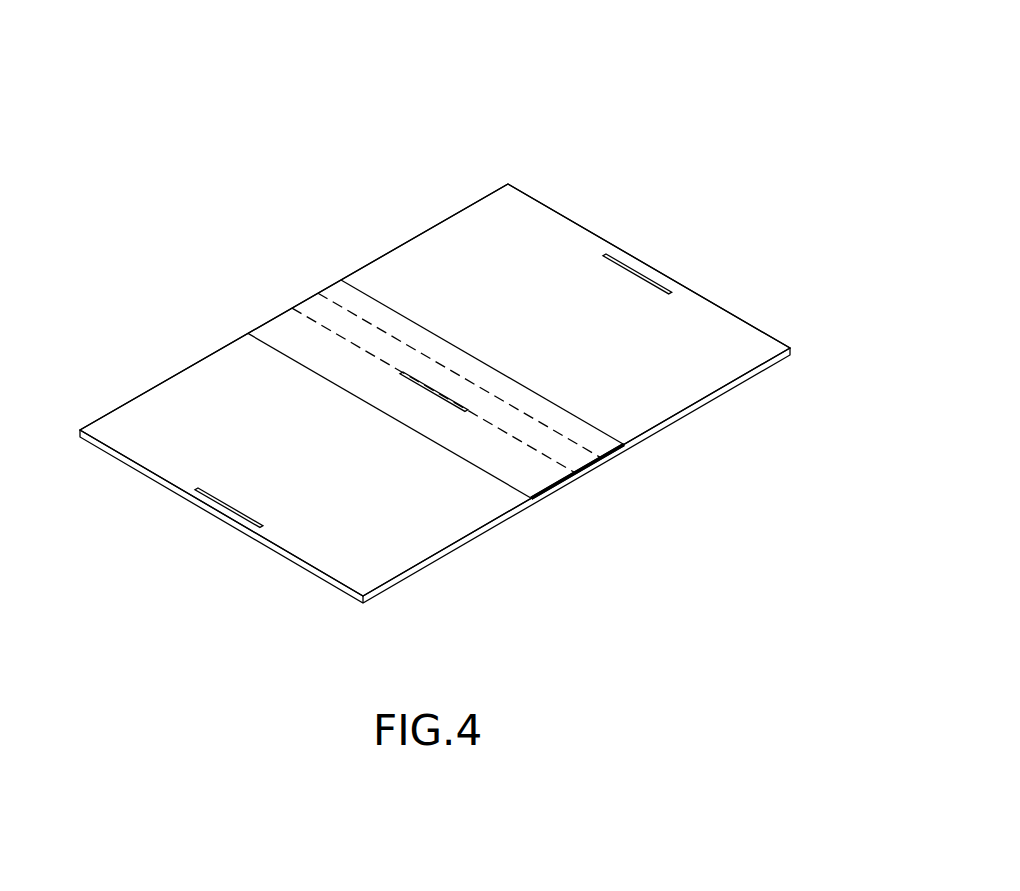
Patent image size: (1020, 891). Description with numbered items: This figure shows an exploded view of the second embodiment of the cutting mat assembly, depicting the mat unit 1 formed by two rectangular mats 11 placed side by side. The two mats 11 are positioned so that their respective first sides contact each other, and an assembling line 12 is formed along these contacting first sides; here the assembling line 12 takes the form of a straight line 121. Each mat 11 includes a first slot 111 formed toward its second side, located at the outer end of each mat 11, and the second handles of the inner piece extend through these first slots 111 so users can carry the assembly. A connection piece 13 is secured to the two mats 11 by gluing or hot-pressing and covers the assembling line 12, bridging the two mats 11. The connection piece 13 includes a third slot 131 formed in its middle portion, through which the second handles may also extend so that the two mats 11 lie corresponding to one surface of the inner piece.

The mat unit 1 is at (252, 129).
The mat 11 is at (137, 396).
The first slot 111 is at (634, 270).
The connection piece 13 is at (403, 314).
The third slot 131 is at (403, 374).
The straight line 121 is at (580, 476).
The assembling line 12 is at (577, 472).